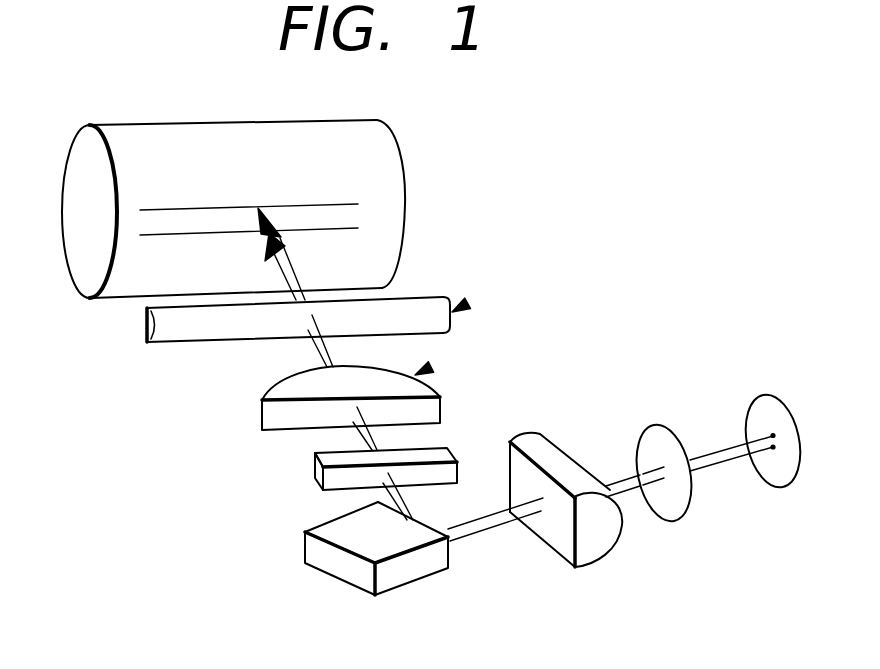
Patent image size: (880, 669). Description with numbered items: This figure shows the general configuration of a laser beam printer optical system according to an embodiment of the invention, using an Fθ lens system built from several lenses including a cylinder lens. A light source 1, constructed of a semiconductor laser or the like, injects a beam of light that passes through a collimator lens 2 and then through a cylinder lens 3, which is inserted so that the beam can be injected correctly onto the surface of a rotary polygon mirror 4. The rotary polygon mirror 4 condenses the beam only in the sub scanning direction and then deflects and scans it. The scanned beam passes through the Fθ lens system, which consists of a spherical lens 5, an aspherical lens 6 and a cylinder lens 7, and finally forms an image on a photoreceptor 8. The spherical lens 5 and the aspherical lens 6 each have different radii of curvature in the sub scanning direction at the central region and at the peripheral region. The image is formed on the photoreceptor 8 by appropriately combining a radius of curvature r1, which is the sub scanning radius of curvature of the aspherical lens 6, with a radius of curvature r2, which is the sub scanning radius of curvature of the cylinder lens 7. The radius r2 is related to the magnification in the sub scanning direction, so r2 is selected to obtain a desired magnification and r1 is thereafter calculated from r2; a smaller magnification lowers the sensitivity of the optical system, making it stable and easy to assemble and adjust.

The light source 1 is at (768, 395).
The collimator lens 2 is at (662, 425).
The cylinder lens 3 is at (572, 459).
The rotary polygon mirror 4 is at (326, 574).
The spherical lens 5 is at (316, 478).
The aspherical lens 6 is at (261, 416).
The cylinder lens 7 is at (429, 296).
The photoreceptor 8 is at (395, 150).
The radius of curvature r1 is at (431, 367).
The radius of curvature r2 is at (467, 304).